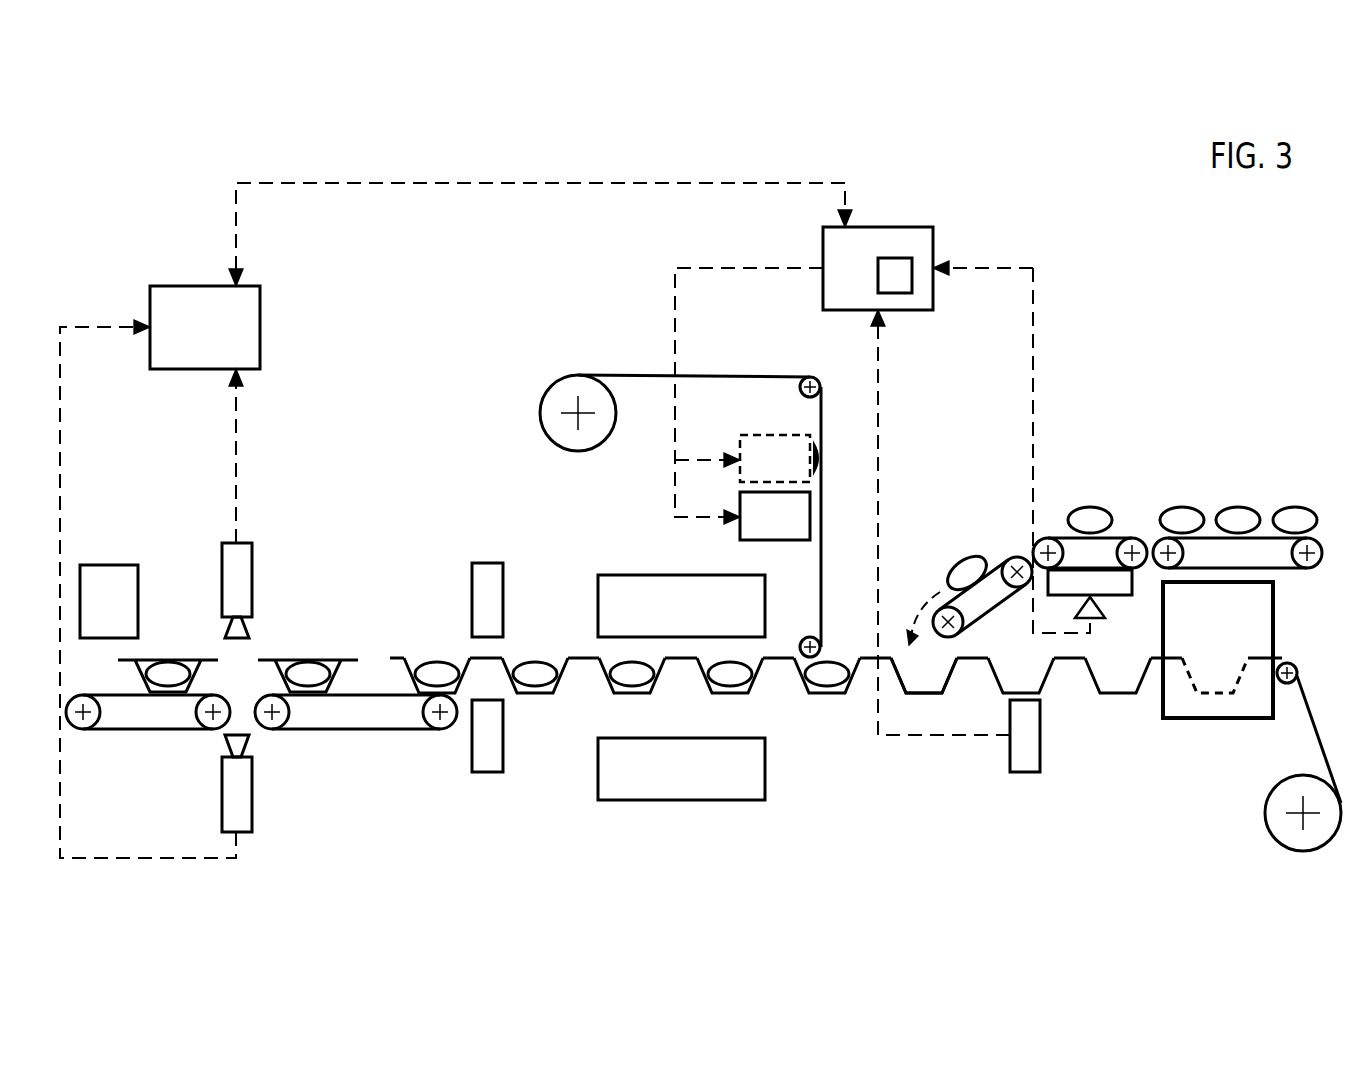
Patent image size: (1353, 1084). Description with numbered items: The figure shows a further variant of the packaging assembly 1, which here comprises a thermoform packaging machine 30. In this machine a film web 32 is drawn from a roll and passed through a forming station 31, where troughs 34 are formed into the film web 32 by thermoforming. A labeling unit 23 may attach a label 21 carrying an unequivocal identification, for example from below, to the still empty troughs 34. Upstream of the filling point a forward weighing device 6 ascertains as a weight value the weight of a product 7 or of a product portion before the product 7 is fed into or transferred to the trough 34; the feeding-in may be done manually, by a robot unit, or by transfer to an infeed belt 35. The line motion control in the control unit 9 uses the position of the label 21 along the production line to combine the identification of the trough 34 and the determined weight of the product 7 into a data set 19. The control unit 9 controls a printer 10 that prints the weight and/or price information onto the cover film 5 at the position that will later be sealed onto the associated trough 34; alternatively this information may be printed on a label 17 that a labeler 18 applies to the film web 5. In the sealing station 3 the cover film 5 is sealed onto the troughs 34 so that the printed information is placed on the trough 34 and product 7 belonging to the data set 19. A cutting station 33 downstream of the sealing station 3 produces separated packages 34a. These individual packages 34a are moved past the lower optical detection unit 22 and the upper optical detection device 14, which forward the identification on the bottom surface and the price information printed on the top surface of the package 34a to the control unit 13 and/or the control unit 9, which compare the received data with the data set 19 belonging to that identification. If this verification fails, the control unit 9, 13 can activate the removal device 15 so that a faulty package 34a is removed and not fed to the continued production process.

The packaging assembly 1 is at (1075, 240).
The sealing station 3 is at (611, 562).
The film web 5 is at (732, 376).
The forward weighing device 6 is at (1053, 512).
The product 7 is at (1090, 515).
The control unit 9 is at (880, 230).
The printer 10 is at (763, 531).
The additional control unit 13 is at (192, 341).
The optical detection device 14 is at (245, 577).
The removal device 15 is at (96, 616).
The label 17 is at (823, 458).
The labeler 18 is at (763, 473).
The data set 19 is at (905, 262).
The label 21 is at (926, 695).
The lower optical detection unit 22 is at (245, 806).
The labeling unit 23 is at (1040, 742).
The thermoform packaging machine 30 is at (627, 313).
The forming station 31 is at (1190, 722).
The film web 32 is at (1315, 725).
The cutting station 33 is at (487, 780).
The trough 34 is at (1112, 695).
The package 34a is at (322, 656).
The infeed belt 35 is at (988, 548).